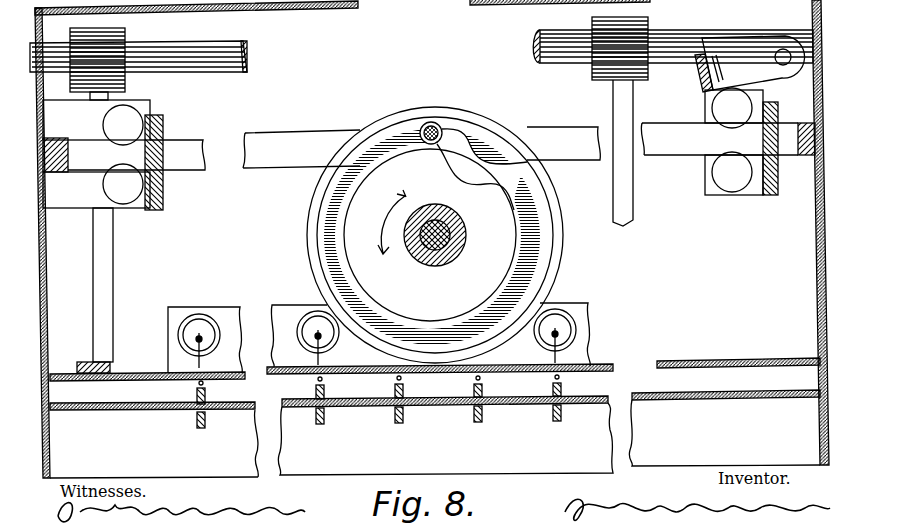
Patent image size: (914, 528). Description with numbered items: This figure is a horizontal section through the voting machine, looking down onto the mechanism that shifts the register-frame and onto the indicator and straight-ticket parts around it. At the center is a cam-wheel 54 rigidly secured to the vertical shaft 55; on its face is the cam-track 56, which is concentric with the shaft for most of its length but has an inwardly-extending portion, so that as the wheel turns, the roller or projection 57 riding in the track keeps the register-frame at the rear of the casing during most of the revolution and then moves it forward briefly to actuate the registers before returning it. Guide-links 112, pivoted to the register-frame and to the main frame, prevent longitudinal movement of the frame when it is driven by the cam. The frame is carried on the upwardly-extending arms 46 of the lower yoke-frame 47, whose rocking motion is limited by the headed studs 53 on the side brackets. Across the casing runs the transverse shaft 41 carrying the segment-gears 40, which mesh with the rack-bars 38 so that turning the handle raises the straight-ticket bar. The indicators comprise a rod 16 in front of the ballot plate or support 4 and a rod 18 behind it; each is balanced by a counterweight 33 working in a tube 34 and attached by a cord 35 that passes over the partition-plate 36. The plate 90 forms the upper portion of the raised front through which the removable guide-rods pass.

The plate or support 4 is at (724, 433).
The rod 16 is at (206, 420).
The rod 18 is at (196, 392).
The counterweight 33 is at (196, 326).
The tube 34 is at (213, 326).
The cord or flexible connection 35 is at (190, 352).
The partition-plate 36 is at (681, 362).
The rack-bar 38 is at (82, 362).
The segment-gear 40 is at (110, 286).
The shaft 41 is at (248, 63).
The upwardly-extending arm 46 is at (62, 142).
The lower yoke-frame 47 is at (433, 146).
The headed stud 53 is at (427, 146).
The cam-wheel 54 is at (430, 235).
The vertical shaft 55 is at (445, 238).
The cam-track 56 is at (537, 206).
The roller or projection 57 is at (437, 126).
The plate 90 is at (445, 439).
The guide-link 112 is at (750, 64).